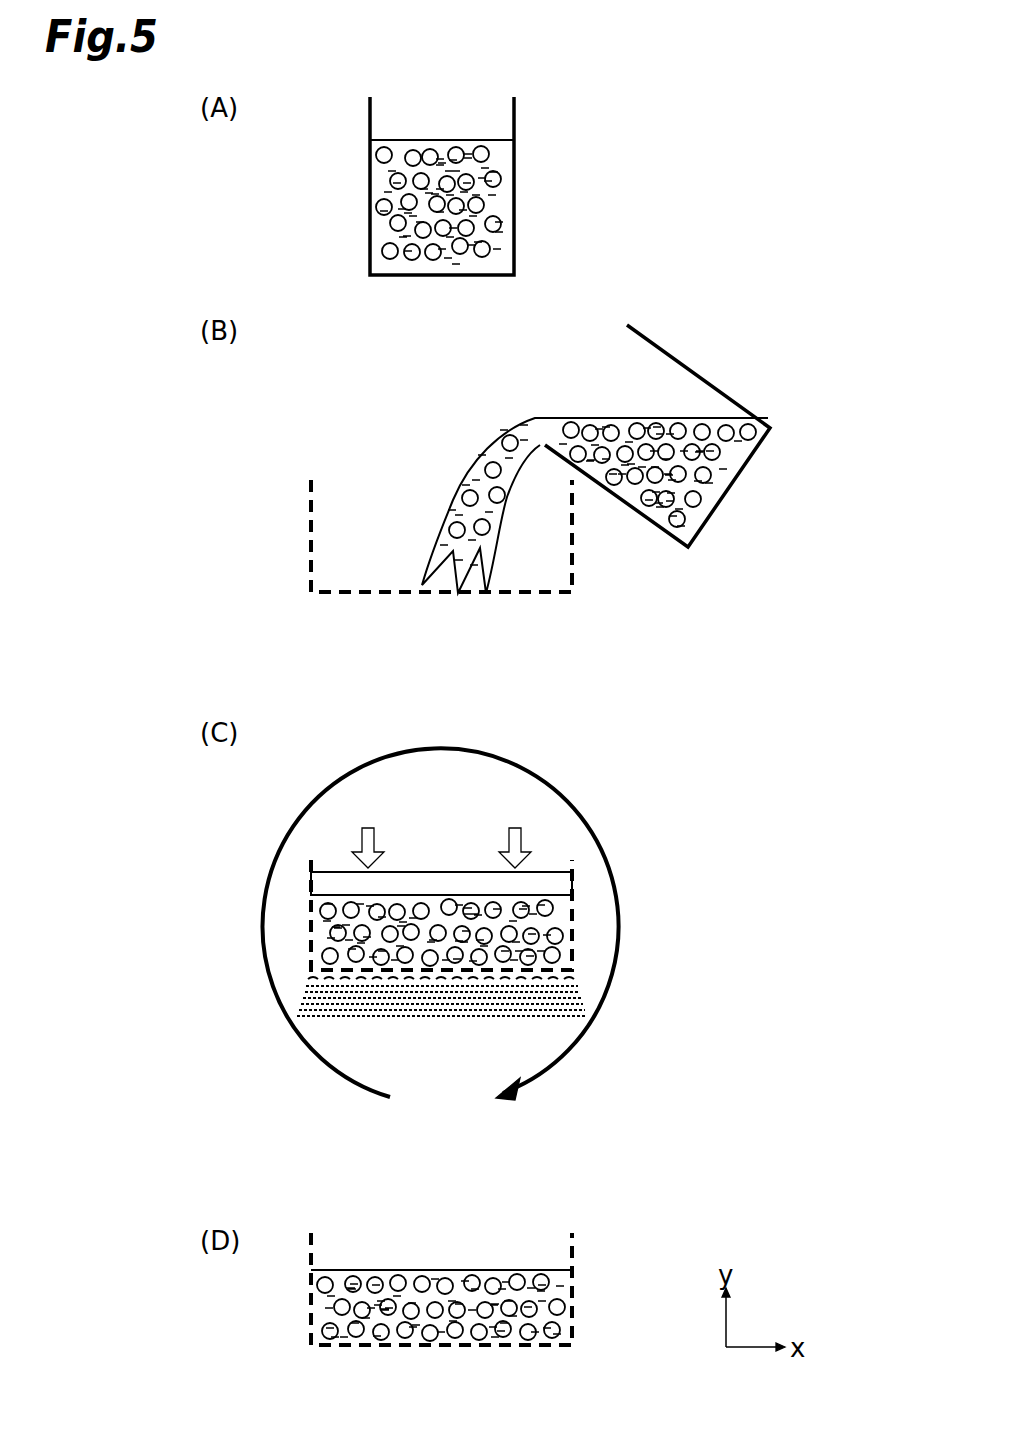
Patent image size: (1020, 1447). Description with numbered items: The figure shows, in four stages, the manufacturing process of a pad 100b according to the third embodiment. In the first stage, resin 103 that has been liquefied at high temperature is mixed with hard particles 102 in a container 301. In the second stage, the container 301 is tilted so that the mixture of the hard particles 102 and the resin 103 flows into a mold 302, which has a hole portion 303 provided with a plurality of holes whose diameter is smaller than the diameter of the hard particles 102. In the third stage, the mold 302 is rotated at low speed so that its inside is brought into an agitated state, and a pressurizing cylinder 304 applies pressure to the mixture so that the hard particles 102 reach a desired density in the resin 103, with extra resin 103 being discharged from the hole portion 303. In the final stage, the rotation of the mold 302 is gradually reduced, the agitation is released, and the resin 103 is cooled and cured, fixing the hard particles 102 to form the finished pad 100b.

The container 301 is at (514, 123).
The hard particles 102 is at (506, 198).
The resin 103 is at (506, 218).
The mold 302 is at (574, 545).
The hole portion 303 is at (511, 596).
The pressurizing cylinder 304 is at (540, 882).
The pad 100b is at (297, 1310).